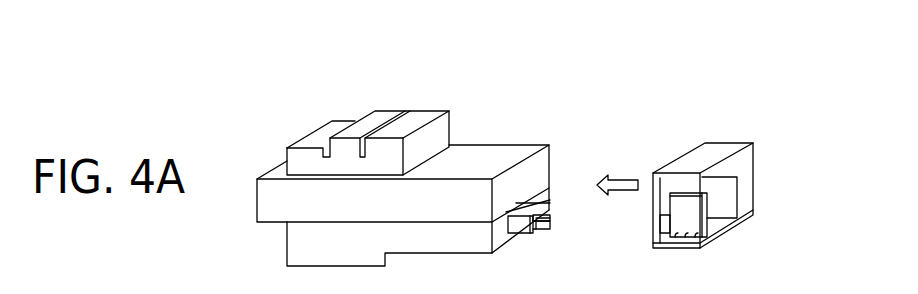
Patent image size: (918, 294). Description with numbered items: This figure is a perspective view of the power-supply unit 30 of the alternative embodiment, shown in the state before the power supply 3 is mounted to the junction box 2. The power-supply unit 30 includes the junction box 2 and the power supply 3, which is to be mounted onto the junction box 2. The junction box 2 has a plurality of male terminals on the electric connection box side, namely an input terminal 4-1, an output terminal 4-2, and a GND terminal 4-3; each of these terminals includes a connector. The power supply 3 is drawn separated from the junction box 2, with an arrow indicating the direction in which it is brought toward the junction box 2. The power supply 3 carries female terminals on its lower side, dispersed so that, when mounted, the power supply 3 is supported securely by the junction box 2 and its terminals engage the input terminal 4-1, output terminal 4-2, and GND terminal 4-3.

The power-supply unit 30 is at (539, 46).
The junction box 2 is at (265, 200).
The power supply 3 is at (715, 147).
The input terminal 4-1 is at (534, 235).
The output terminal 4-2 is at (552, 221).
The GND terminal 4-3 is at (552, 208).